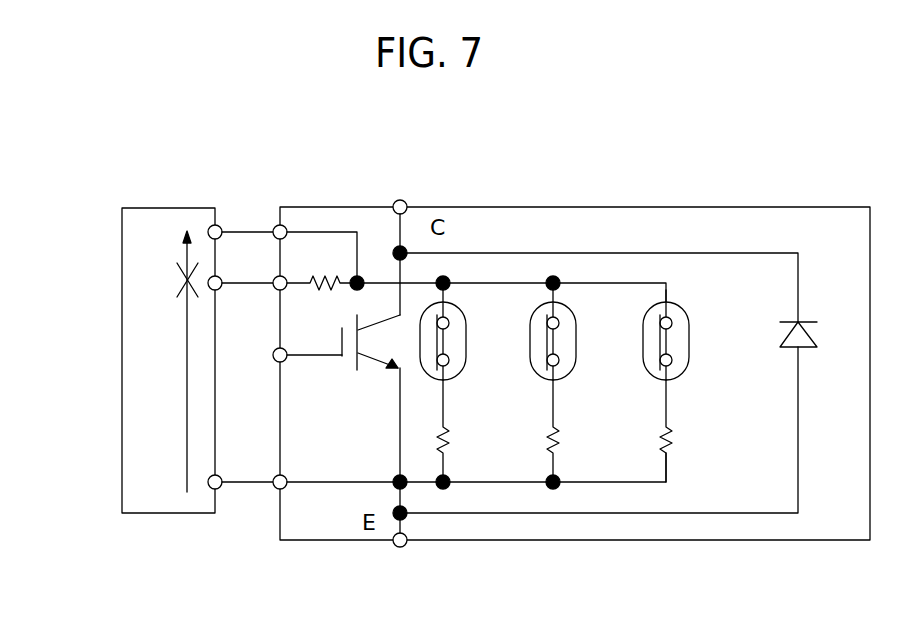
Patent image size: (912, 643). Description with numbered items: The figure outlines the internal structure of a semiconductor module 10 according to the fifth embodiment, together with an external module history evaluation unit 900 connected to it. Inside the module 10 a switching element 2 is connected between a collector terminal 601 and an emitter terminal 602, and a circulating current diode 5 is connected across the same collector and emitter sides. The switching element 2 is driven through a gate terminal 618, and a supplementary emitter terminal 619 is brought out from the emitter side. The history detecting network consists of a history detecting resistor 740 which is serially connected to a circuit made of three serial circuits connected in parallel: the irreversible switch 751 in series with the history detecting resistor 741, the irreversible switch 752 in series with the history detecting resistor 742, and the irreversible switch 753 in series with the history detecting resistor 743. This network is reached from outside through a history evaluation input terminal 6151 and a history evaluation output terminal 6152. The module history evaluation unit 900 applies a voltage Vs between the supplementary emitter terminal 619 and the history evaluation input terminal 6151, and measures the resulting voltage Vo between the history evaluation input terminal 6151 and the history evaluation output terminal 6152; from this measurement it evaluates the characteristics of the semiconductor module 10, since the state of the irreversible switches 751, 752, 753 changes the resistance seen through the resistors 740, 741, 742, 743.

The module history evaluation unit 900 is at (122, 235).
The semiconductor module 10 is at (790, 207).
The history evaluation input terminal 6151 is at (274, 228).
The history evaluation output terminal 6152 is at (274, 288).
The gate terminal 618 is at (274, 352).
The supplementary emitter terminal 619 is at (275, 488).
The history detecting resistor 740 is at (313, 268).
The collector terminal 601 is at (400, 200).
The emitter terminal 602 is at (400, 548).
The IGBT 2 is at (370, 375).
The irreversible switch 751 is at (470, 310).
The irreversible switch 752 is at (582, 310).
The irreversible switch 753 is at (695, 310).
The history detecting resistor 741 is at (452, 450).
The history detecting resistor 742 is at (562, 450).
The history detecting resistor 743 is at (675, 450).
The circulating current diode 5 is at (808, 318).